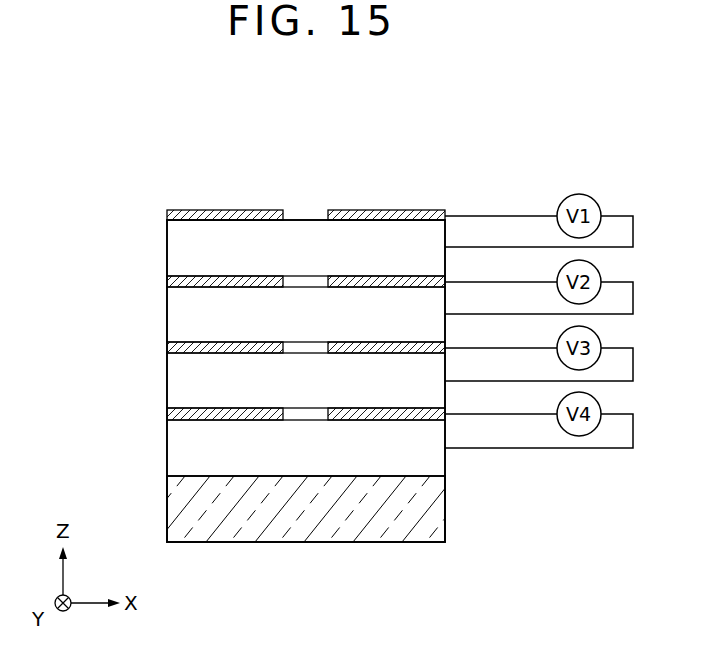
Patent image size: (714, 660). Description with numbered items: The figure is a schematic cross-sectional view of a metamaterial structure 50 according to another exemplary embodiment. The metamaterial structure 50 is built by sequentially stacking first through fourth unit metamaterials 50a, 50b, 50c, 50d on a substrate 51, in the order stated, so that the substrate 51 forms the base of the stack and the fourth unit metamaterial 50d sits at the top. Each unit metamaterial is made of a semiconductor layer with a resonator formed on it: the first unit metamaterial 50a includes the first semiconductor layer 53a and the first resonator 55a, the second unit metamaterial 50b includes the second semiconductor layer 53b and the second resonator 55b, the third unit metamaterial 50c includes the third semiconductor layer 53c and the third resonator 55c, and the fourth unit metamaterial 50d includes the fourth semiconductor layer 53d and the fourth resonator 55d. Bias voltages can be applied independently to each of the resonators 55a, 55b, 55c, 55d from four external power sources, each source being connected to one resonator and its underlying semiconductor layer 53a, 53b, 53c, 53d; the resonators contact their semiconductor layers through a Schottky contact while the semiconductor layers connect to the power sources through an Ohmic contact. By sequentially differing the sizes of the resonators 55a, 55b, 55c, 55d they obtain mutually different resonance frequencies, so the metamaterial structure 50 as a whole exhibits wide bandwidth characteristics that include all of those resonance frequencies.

The metamaterial structure 50 is at (131, 167).
The first unit metamaterial 50a is at (84, 207).
The second unit metamaterial 50b is at (84, 274).
The third unit metamaterial 50c is at (84, 340).
The fourth unit metamaterial 50d is at (84, 406).
The first resonator 55a is at (167, 213).
The second resonator 55b is at (167, 282).
The third resonator 55c is at (167, 348).
The fourth resonator 55d is at (167, 415).
The first semiconductor layer 53a is at (167, 255).
The second semiconductor layer 53b is at (167, 322).
The third semiconductor layer 53c is at (167, 389).
The fourth semiconductor layer 53d is at (167, 458).
The substrate 51 is at (167, 507).